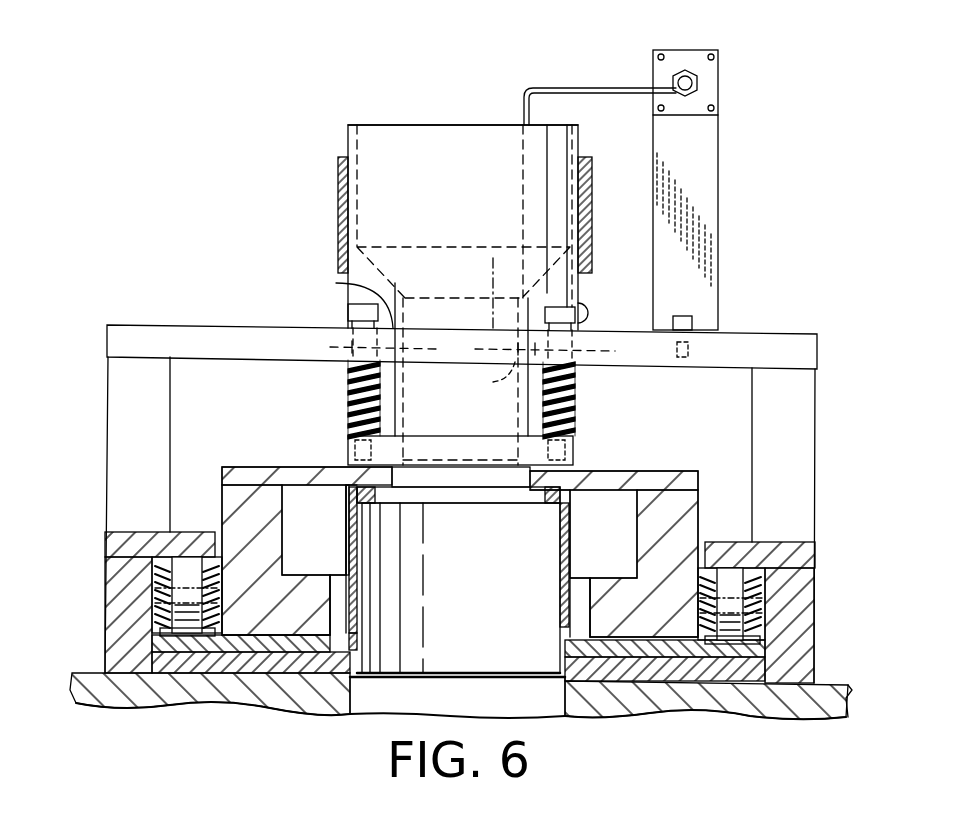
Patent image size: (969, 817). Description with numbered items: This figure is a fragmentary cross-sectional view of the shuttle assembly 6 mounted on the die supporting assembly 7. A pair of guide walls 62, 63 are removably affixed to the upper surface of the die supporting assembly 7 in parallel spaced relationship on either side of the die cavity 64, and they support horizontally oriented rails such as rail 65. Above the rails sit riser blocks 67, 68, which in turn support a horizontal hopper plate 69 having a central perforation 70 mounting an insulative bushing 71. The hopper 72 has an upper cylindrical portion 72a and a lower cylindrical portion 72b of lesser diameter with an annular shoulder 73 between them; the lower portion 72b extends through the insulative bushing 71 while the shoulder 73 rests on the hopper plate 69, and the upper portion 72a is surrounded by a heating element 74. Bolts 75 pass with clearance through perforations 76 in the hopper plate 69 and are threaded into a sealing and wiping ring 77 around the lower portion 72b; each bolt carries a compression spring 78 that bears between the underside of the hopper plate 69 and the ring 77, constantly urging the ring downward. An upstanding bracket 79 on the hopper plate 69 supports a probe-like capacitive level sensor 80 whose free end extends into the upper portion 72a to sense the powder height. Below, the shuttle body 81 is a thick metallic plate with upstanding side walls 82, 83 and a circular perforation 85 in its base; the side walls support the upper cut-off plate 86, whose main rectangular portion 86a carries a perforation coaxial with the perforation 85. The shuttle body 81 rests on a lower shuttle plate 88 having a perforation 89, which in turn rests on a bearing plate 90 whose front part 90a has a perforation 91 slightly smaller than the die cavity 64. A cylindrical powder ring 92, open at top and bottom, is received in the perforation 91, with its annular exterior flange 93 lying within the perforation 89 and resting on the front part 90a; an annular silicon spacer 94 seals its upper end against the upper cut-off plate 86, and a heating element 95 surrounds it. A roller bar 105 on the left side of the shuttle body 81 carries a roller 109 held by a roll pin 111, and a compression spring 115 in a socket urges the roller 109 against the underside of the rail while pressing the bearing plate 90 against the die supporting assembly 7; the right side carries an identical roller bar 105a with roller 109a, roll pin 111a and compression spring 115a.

The shuttle assembly 6 is at (778, 330).
The die supporting assembly 7 is at (805, 705).
The guide wall 62 is at (815, 622).
The guide wall 63 is at (110, 646).
The die cavity 64 is at (560, 698).
The rail 65 is at (817, 554).
The riser block 67 is at (808, 453).
The riser block 68 is at (118, 399).
The hopper plate 69 is at (758, 349).
The central perforation 70 is at (490, 379).
The insulative bushing 71 is at (472, 350).
The hopper 72 is at (590, 140).
The upper cylindrical portion 72a is at (531, 128).
The lower cylindrical portion 72b is at (461, 374).
The annular shoulder 73 is at (336, 284).
The heating element 74 is at (592, 180).
The bolt 75 is at (350, 312).
The perforation 76 is at (471, 347).
The sealing and wiping ring 77 is at (575, 452).
The compression spring 78 is at (348, 404).
The upstanding bracket 79 is at (712, 133).
The capacitive level sensor 80 is at (598, 85).
The shuttle body 81 is at (604, 588).
The side wall 82 is at (645, 510).
The side wall 83 is at (275, 500).
The circular perforation 85 is at (340, 595).
The upper cut-off plate 86 is at (682, 470).
The main rectangular portion 86a is at (262, 470).
The lower shuttle plate 88 is at (765, 662).
The perforation 89 is at (356, 626).
The bearing plate 90 is at (273, 662).
The front part 90a is at (232, 662).
The perforation 91 is at (333, 685).
The powder ring 92 is at (365, 565).
The annular exterior flange 93 is at (350, 645).
The annular silicon spacer 94 is at (376, 491).
The heating element 95 is at (347, 529).
The roller bar 105 is at (178, 614).
The roller bar 105a is at (785, 650).
The roller 109 is at (184, 578).
The roller 109a is at (735, 580).
The roll pin 111 is at (162, 588).
The roll pin 111a is at (758, 592).
The compression spring 115 is at (162, 640).
The compression spring 115a is at (750, 668).